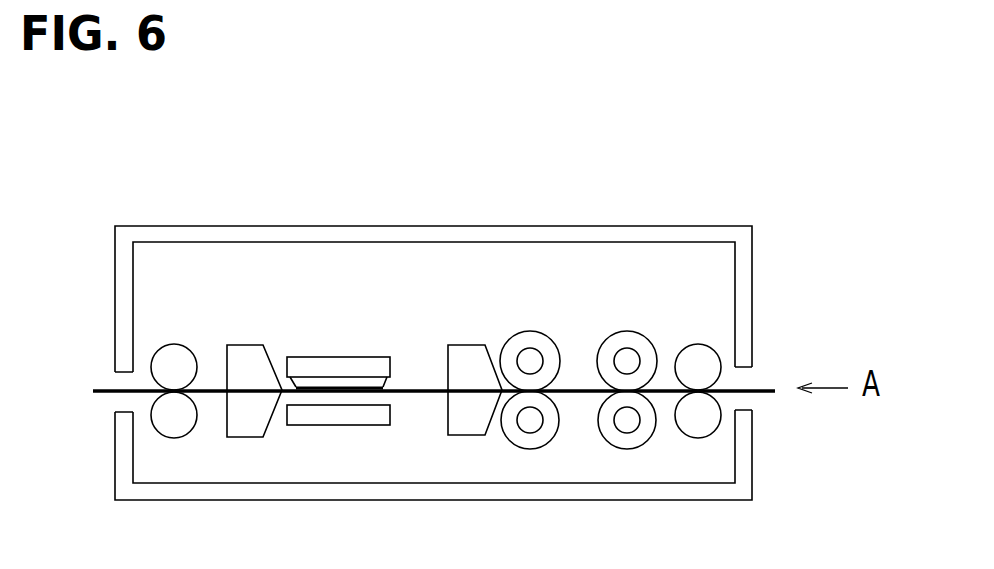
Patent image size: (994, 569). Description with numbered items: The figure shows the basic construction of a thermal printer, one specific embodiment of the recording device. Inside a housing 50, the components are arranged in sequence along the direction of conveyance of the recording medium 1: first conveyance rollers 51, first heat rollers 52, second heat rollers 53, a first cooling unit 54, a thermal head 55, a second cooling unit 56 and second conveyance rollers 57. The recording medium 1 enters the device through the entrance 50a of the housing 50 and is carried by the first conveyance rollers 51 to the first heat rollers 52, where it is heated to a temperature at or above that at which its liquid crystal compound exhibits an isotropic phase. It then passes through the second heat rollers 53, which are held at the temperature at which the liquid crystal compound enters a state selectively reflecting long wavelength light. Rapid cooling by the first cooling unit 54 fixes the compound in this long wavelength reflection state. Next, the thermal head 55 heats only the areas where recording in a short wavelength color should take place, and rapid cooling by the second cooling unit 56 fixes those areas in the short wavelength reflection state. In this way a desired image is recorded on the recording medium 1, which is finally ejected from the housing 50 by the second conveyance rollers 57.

The recording medium 1 is at (767, 380).
The housing 50 is at (753, 250).
The entrance 50a is at (747, 397).
The first conveyance rollers 51 is at (718, 350).
The first heat rollers 52 is at (637, 330).
The second heat rollers 53 is at (527, 330).
The first cooling unit 54 is at (463, 345).
The thermal head 55 is at (333, 357).
The second cooling unit 56 is at (263, 345).
The second conveyance rollers 57 is at (172, 345).